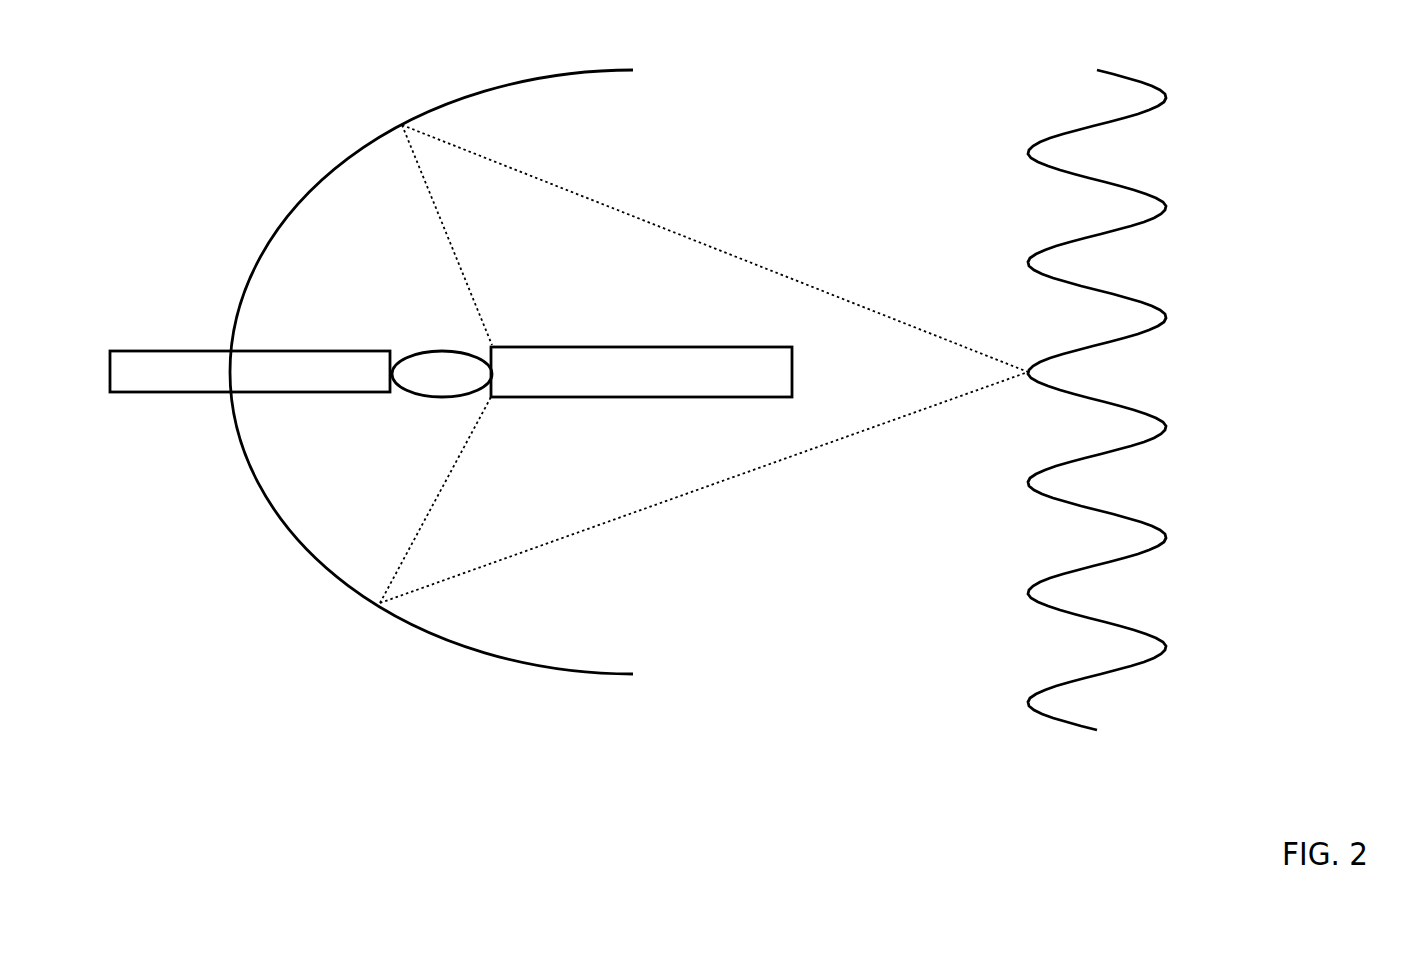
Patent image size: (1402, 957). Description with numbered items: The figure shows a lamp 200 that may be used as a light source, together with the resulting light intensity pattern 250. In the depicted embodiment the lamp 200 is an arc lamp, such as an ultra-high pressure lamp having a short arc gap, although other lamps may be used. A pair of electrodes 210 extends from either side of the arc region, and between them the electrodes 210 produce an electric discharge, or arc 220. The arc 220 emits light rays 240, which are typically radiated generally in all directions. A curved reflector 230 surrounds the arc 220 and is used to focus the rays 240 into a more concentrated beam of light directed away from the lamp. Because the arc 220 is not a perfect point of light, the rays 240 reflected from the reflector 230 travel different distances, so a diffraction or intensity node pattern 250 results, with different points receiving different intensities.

The lamp 200 is at (645, 747).
The electrodes 210 is at (230, 372).
The electric discharge (arc) 220 is at (448, 358).
The reflector 230 is at (348, 587).
The light rays 240 is at (548, 545).
The light intensity pattern 250 is at (1097, 135).